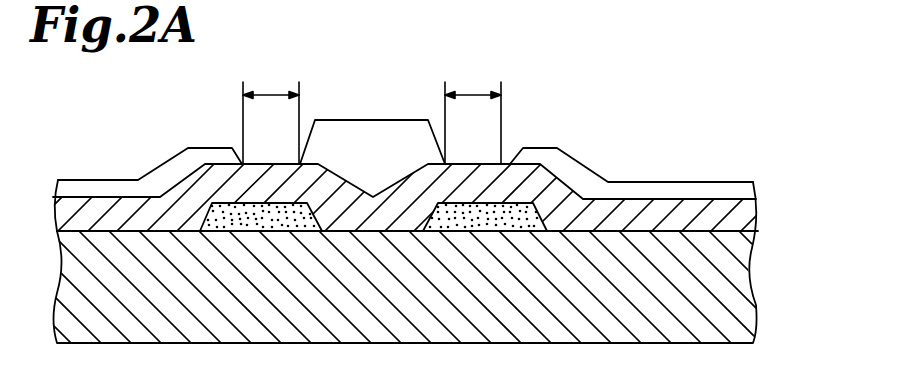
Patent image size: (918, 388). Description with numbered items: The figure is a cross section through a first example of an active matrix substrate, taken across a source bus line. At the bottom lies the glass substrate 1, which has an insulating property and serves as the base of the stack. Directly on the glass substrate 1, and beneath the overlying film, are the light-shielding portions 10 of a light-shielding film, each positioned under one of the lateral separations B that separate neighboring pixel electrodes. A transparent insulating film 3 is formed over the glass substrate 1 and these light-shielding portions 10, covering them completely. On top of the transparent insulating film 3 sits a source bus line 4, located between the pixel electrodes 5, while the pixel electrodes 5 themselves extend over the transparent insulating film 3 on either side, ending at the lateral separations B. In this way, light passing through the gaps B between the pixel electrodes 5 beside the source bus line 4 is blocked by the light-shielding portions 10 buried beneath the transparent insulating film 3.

The glass substrate 1 is at (728, 305).
The transparent insulating film 3 is at (713, 210).
The source bus line 4 is at (368, 137).
The pixel electrode 5 is at (100, 185).
The light-shielding portion 10 is at (222, 208).
The lateral separation B is at (372, 113).